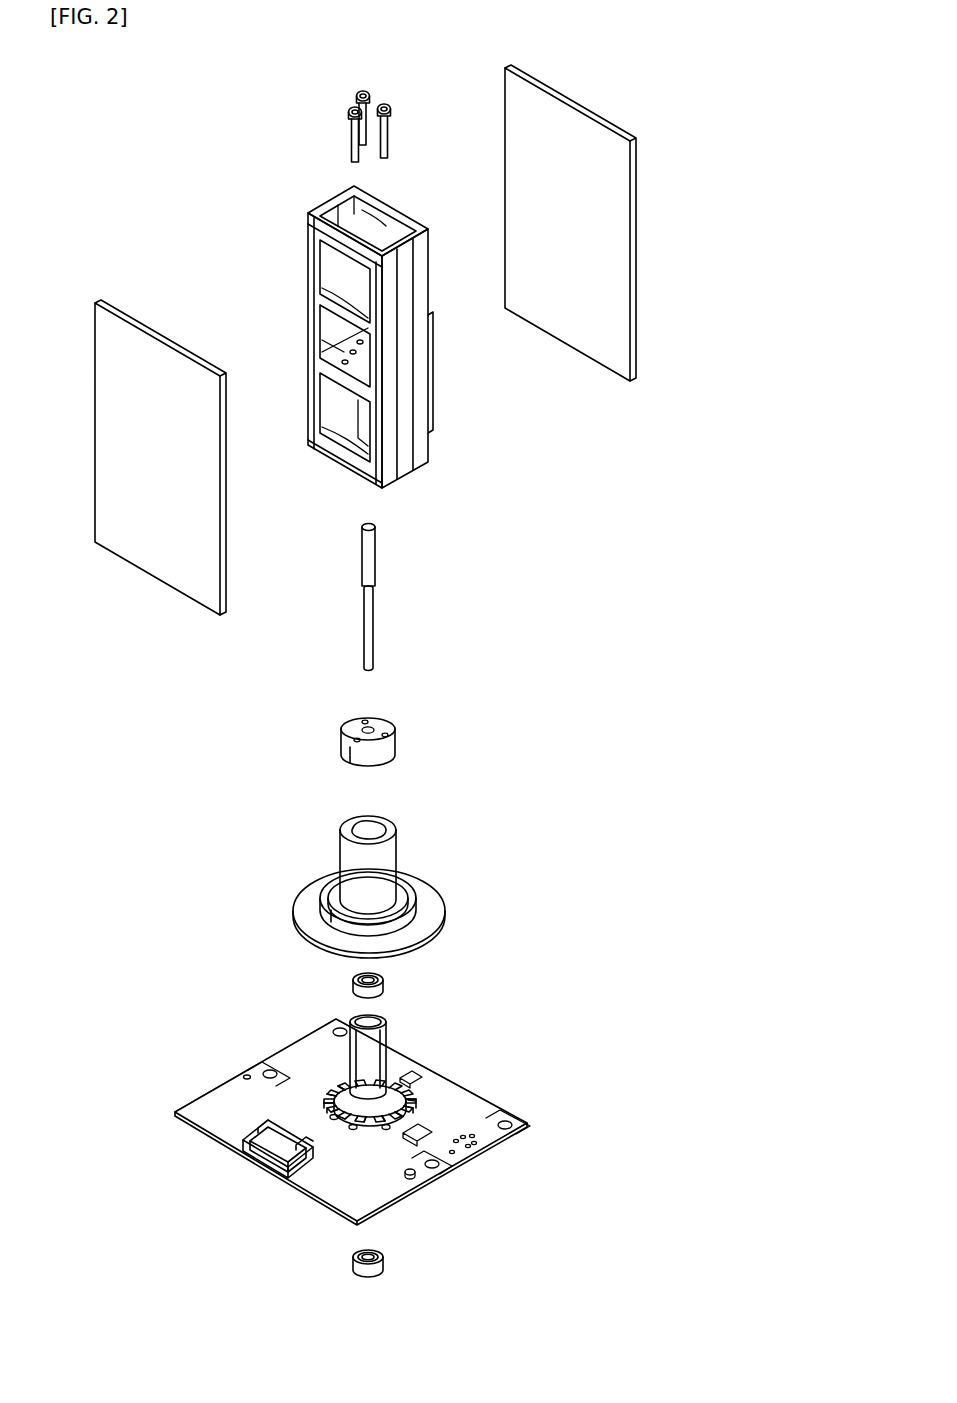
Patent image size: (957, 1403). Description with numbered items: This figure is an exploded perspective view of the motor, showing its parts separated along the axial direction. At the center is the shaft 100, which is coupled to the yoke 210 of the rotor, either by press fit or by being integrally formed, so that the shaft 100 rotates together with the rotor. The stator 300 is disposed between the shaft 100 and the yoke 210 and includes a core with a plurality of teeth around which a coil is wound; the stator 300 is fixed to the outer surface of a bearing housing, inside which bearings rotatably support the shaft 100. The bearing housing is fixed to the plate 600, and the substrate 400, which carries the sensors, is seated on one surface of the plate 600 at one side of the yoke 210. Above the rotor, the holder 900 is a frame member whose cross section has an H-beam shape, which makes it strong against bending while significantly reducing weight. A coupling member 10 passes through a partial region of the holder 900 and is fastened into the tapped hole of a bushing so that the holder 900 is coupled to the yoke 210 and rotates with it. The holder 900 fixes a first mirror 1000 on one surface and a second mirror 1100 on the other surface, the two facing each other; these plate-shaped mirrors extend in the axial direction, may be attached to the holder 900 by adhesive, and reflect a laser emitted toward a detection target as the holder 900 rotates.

The coupling member 10 is at (351, 130).
The holder 900 is at (293, 246).
The second mirror 1100 is at (650, 176).
The first mirror 1000 is at (165, 547).
The shaft 100 is at (386, 567).
The yoke 210 is at (398, 840).
The stator 300 is at (391, 1064).
The substrate 400 is at (474, 1092).
The plate 600 is at (528, 1125).